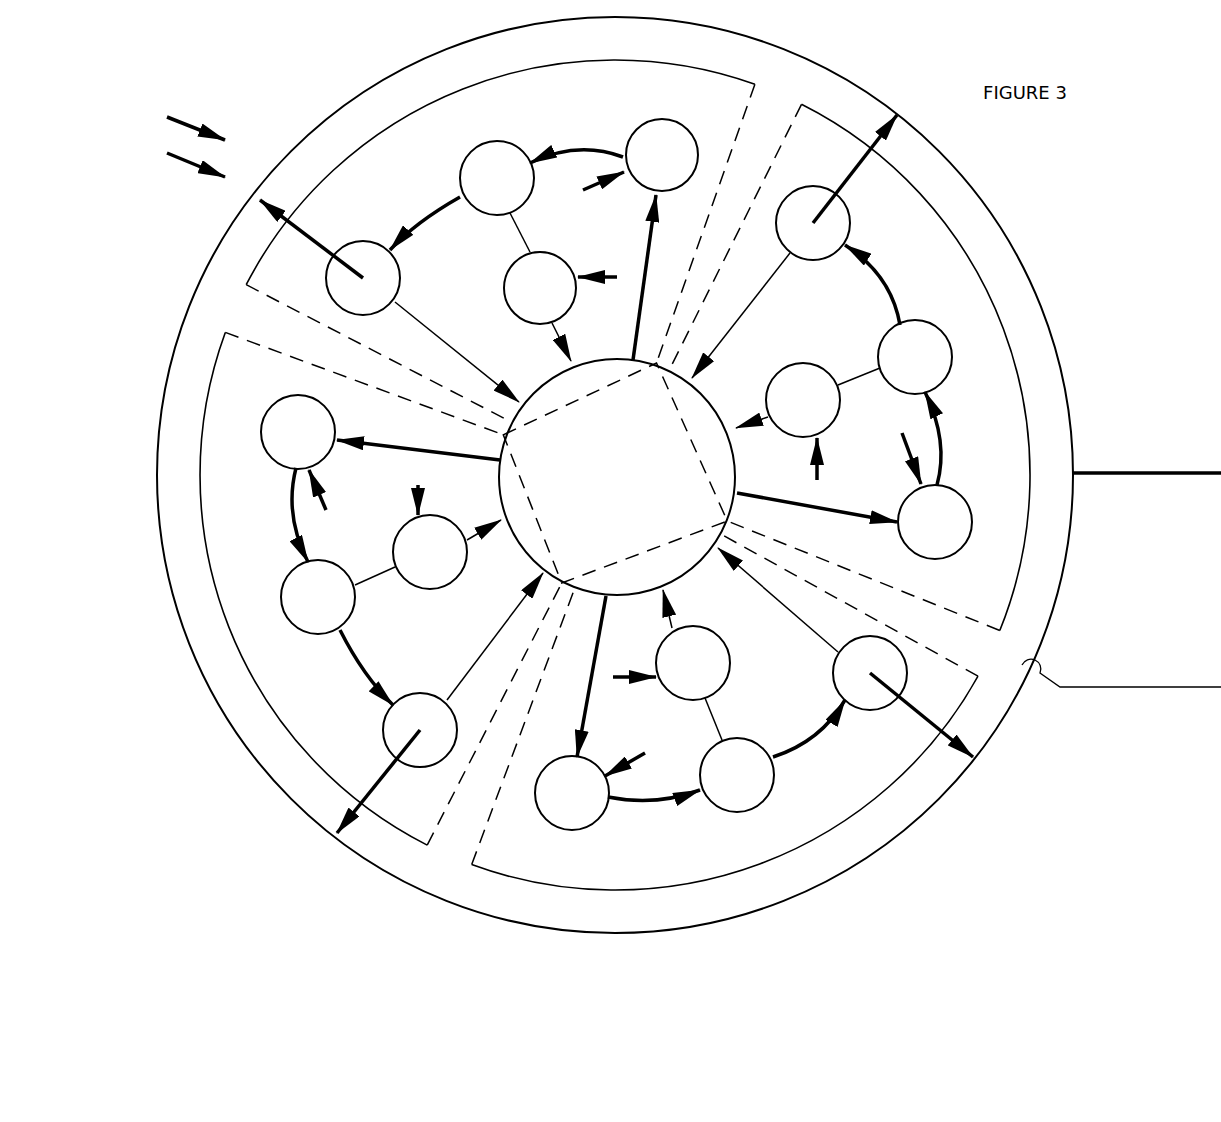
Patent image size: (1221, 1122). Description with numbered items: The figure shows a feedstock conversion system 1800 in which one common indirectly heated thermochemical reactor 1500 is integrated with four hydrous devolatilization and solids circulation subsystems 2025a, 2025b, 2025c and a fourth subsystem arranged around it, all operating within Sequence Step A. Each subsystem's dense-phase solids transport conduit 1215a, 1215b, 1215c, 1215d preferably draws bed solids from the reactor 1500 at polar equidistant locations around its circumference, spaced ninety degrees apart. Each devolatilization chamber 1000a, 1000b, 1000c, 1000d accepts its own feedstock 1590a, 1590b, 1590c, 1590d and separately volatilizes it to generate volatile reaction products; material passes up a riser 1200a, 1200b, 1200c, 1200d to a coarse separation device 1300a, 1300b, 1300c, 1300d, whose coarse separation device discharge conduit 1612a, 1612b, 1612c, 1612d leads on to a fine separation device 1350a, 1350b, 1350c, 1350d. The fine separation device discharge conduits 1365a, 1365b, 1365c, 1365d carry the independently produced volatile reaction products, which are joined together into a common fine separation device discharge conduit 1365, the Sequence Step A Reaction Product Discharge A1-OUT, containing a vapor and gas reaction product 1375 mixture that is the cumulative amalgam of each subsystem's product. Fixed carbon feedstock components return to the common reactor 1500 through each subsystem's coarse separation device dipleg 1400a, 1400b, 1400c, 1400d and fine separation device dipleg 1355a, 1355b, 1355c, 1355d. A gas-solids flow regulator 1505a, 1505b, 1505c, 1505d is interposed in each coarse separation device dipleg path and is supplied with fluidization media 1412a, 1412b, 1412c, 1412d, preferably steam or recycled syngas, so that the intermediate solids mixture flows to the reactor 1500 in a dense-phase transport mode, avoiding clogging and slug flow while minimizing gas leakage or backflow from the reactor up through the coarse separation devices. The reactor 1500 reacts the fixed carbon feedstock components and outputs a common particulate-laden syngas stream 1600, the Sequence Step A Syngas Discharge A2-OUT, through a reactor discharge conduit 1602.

The feedstock conversion system 1800 is at (112, 121).
The Sequence Step A is at (142, 161).
The thermochemical reactor 1500 is at (1022, 665).
The particulate-laden syngas stream 1600 is at (1130, 687).
The reactor discharge conduit 1602 is at (1200, 687).
The Sequence Step A Syngas Discharge A2-OUT is at (1153, 690).
The common fine separation device discharge conduit 1365 is at (1131, 472).
The vapor and gas reaction product 1375 is at (1200, 472).
The Sequence Step A Reaction Product Discharge A1-OUT is at (1153, 476).
The riser 1200d is at (513, 72).
The coarse separation device 1300d is at (497, 178).
The devolatilization chamber 1000d is at (662, 155).
The fine separation device 1350d is at (363, 278).
The gas-solids flow regulator 1505d is at (540, 306).
The coarse separation device discharge conduit 1612d is at (441, 204).
The feedstock 1590d is at (580, 189).
The dense-phase solids transport conduit 1215d is at (647, 225).
The fine separation device discharge conduit 1365d is at (313, 233).
The coarse separation device dipleg 1400d is at (514, 233).
The fine separation device dipleg 1355d is at (412, 307).
The fluidization media 1412d is at (617, 270).
The hydrous devolatilization and solids circulation subsystem 2025c is at (1022, 397).
The fine separation device 1350c is at (813, 223).
The coarse separation device 1300c is at (915, 357).
The gas-solids flow regulator 1505c is at (788, 400).
The devolatilization chamber 1000c is at (935, 522).
The fine separation device discharge conduit 1365c is at (857, 173).
The coarse separation device discharge conduit 1612c is at (873, 283).
The fine separation device dipleg 1355c is at (780, 270).
The coarse separation device dipleg 1400c is at (858, 375).
The riser 1200c is at (943, 435).
The feedstock 1590c is at (890, 449).
The dense-phase solids transport conduit 1215c is at (866, 512).
The fluidization media 1412c is at (817, 486).
The hydrous devolatilization and solids circulation subsystem 2025a is at (207, 553).
The devolatilization chamber 1000a is at (298, 432).
The gas-solids flow regulator 1505a is at (447, 552).
The coarse separation device 1300a is at (318, 597).
The fine separation device 1350a is at (420, 730).
The dense-phase solids transport conduit 1215a is at (368, 447).
The fluidization media 1412a is at (417, 472).
The riser 1200a is at (293, 500).
The feedstock 1590a is at (342, 501).
The coarse separation device dipleg 1400a is at (375, 577).
The fine separation device dipleg 1355a is at (460, 683).
The coarse separation device discharge conduit 1612a is at (358, 677).
The fine separation device discharge conduit 1365a is at (377, 782).
The hydrous devolatilization and solids circulation subsystem 2025b is at (725, 875).
The gas-solids flow regulator 1505b is at (693, 645).
The fine separation device 1350b is at (870, 673).
The coarse separation device 1300b is at (737, 775).
The devolatilization chamber 1000b is at (572, 793).
The fluidization media 1412b is at (613, 686).
The fine separation device dipleg 1355b is at (823, 638).
The coarse separation device dipleg 1400b is at (717, 718).
The dense-phase solids transport conduit 1215b is at (585, 723).
The feedstock 1590b is at (653, 760).
The riser 1200b is at (655, 797).
The coarse separation device discharge conduit 1612b is at (808, 733).
The fine separation device discharge conduit 1365b is at (920, 713).